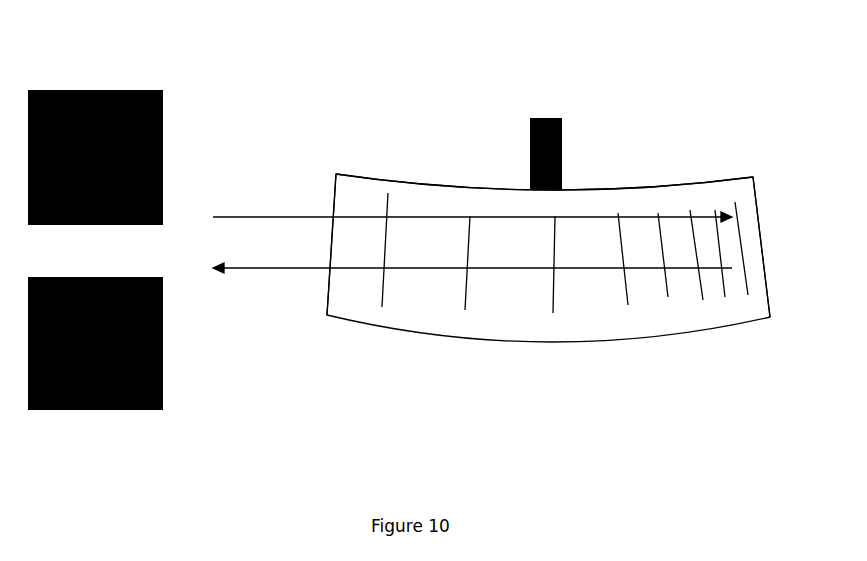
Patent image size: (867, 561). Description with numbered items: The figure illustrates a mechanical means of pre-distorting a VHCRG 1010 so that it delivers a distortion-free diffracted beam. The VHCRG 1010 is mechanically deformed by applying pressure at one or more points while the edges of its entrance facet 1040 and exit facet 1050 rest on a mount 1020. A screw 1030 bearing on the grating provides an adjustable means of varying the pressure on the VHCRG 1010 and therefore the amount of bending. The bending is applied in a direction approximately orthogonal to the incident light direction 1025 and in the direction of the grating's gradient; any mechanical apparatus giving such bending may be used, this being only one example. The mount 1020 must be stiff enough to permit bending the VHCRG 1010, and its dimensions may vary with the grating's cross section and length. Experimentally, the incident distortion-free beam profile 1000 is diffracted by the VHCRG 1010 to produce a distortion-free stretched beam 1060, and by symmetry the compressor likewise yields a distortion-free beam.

The incident distortion-free beam profile 1000 is at (91, 90).
The distortion-free stretched beam 1060 is at (90, 410).
The VHCRG 1010 is at (438, 185).
The mount 1020 is at (320, 140).
The incident light direction 1025 is at (267, 215).
The screw 1030 is at (548, 118).
The entrance facet 1040 is at (338, 316).
The exit facet 1050 is at (760, 318).